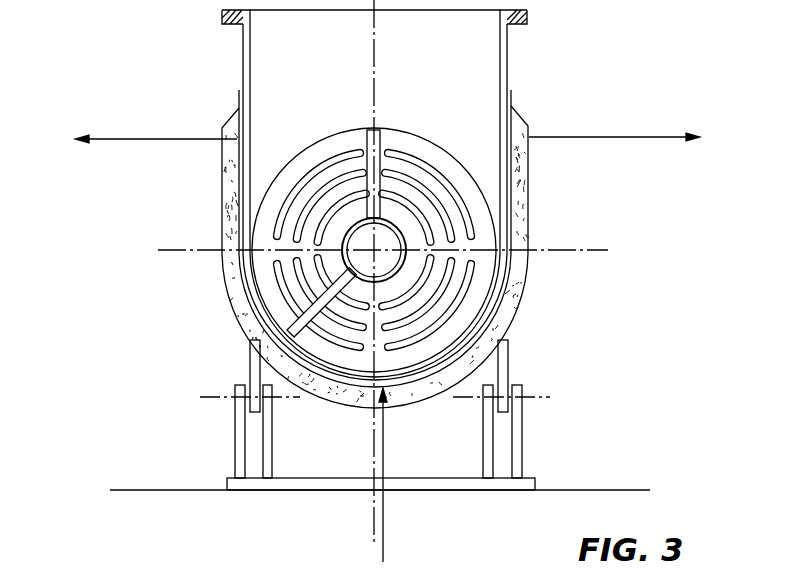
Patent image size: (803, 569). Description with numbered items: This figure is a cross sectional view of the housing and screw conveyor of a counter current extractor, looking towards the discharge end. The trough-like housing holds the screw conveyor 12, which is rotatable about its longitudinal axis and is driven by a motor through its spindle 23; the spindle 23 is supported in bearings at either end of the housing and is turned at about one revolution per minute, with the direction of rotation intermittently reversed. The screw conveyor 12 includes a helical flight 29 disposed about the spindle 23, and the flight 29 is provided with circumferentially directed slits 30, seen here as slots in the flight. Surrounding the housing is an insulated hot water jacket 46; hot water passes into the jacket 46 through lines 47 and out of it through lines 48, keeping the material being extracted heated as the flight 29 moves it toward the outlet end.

The screw conveyor 12 is at (451, 297).
The spindle 23 is at (400, 243).
The helical flight 29 is at (443, 170).
The circumferentially directed slits 30 is at (287, 297).
The insulated hot water jacket 46 is at (509, 195).
The lines 47 is at (454, 475).
The lines 48 is at (385, 126).